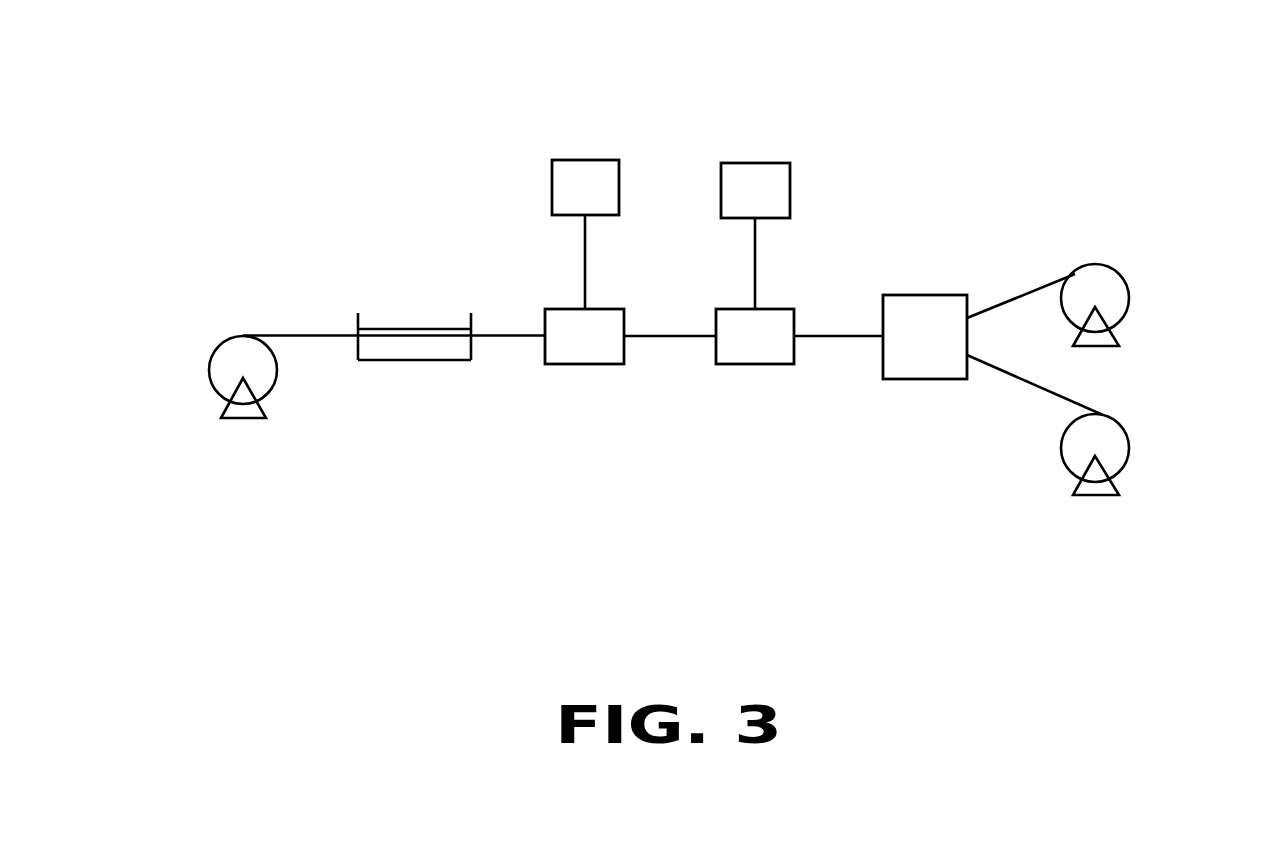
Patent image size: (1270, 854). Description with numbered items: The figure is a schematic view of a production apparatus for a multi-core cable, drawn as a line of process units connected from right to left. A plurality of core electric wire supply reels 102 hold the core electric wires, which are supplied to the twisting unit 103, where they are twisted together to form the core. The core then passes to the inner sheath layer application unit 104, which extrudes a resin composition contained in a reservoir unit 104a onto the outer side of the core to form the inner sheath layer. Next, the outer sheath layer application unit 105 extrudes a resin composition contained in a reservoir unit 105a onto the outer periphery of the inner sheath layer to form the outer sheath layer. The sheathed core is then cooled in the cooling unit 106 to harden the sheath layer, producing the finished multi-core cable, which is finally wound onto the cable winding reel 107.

The core electric wire supply reel 102 is at (1112, 293).
The twisting unit 103 is at (925, 350).
The inner sheath layer application unit 104 is at (746, 351).
The reservoir unit 104a is at (746, 183).
The outer sheath layer application unit 105 is at (576, 351).
The reservoir unit 105a is at (577, 182).
The cooling unit 106 is at (413, 351).
The cable winding reel 107 is at (225, 372).